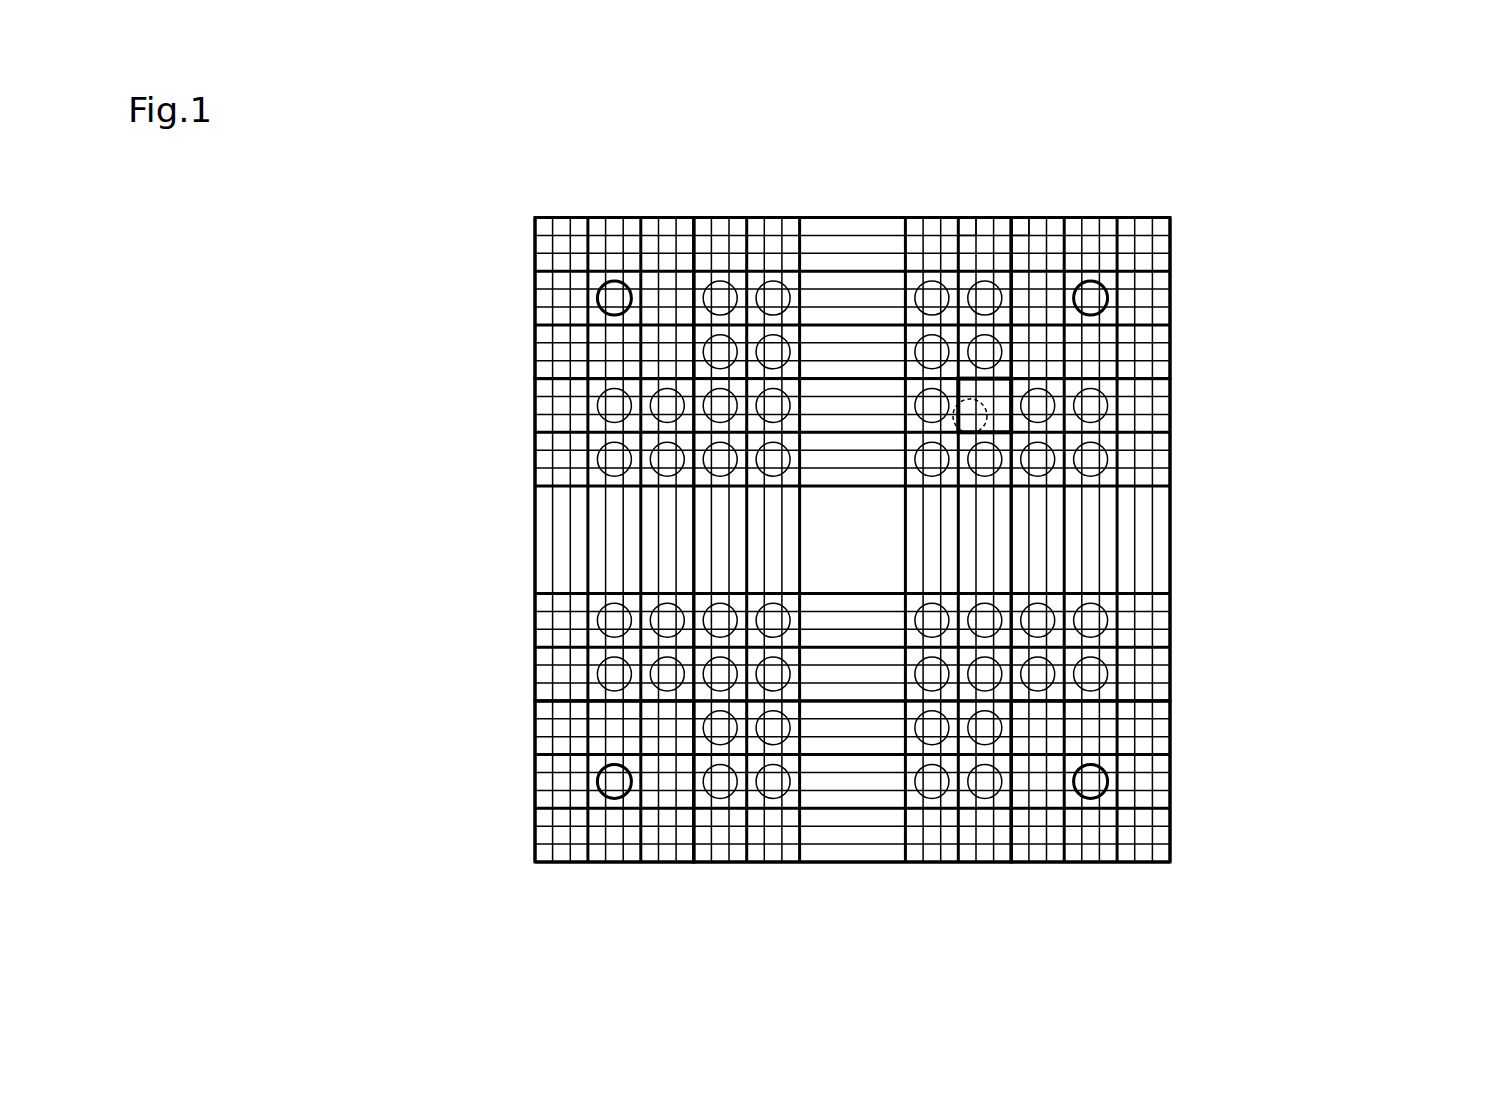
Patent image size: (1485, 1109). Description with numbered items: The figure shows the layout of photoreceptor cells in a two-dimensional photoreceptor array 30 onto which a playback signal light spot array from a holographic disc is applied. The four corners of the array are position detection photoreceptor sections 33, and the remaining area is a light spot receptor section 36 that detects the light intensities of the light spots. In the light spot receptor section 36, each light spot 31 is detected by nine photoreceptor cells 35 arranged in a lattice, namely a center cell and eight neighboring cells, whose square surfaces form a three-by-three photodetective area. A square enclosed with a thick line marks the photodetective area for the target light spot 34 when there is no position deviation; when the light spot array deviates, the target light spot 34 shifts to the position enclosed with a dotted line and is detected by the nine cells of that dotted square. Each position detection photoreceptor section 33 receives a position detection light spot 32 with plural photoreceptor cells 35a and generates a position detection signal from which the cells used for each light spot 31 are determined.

The two-dimensional photoreceptor array 30 is at (1170, 920).
The light spot 31 is at (970, 288).
The position detection light spot 32 is at (1258, 521).
The position detection photoreceptor section 33 is at (1180, 862).
The target light spot 34 is at (1000, 390).
The photoreceptor cell 35 is at (968, 221).
The photoreceptor cell 35a is at (1020, 221).
The light spot receptor section 36 is at (1010, 872).